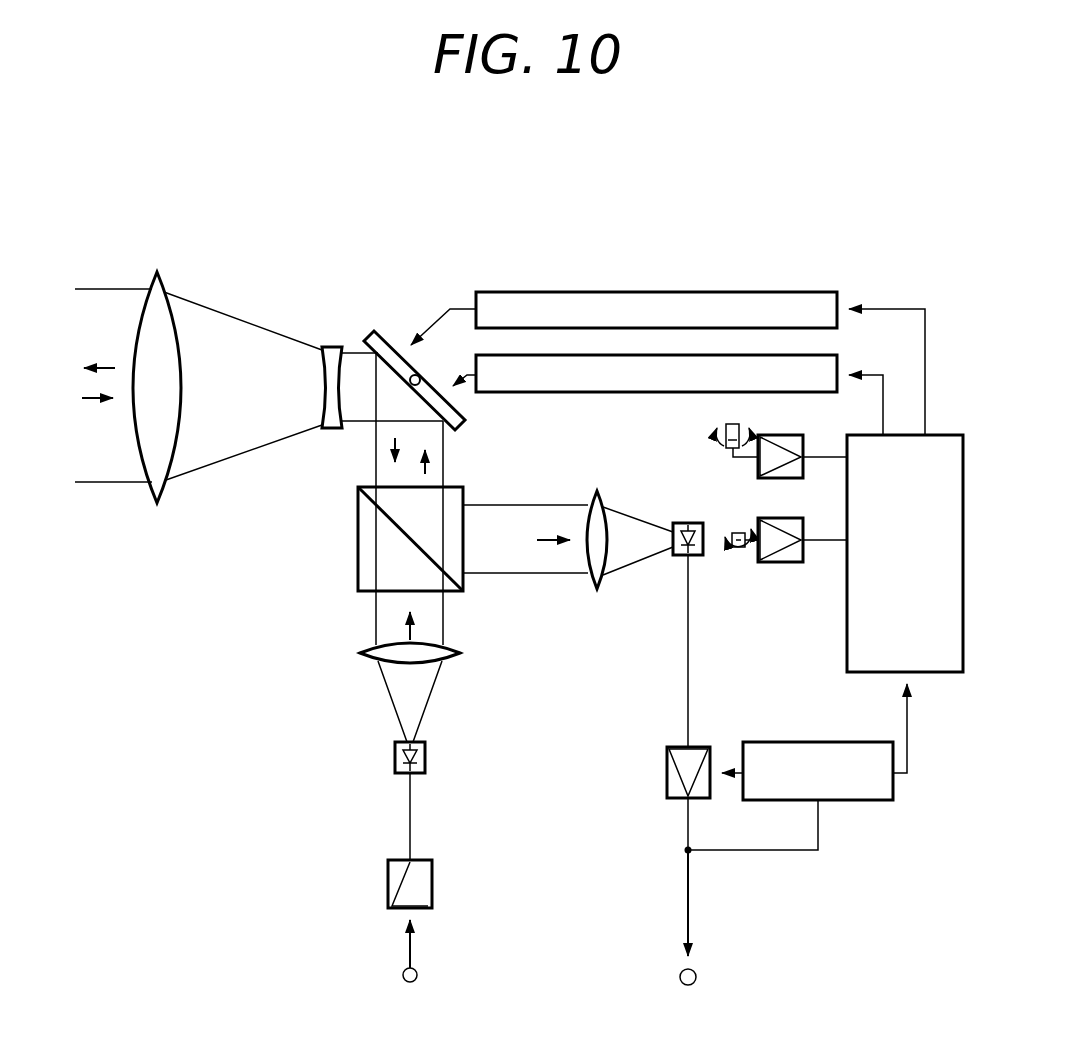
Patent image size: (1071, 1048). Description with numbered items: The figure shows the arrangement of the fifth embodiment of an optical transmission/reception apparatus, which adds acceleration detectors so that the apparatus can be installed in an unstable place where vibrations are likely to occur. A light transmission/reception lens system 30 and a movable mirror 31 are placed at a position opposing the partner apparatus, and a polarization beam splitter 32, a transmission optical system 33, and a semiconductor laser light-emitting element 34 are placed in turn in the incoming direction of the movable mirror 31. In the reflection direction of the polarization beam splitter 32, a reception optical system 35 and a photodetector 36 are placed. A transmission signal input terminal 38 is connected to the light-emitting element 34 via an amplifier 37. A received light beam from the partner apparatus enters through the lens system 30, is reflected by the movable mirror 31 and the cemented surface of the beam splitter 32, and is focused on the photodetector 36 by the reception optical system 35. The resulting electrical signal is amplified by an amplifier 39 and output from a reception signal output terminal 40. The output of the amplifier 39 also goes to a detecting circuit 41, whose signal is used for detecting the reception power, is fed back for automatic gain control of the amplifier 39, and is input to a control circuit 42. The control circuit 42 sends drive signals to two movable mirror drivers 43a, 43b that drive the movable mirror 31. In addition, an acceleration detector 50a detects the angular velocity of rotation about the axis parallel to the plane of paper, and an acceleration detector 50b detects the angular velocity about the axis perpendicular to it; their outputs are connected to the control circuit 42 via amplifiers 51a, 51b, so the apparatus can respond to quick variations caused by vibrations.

The light transmission/reception lens system 30 is at (160, 290).
The movable mirror 31 is at (387, 338).
The polarization beam splitter 32 is at (358, 509).
The transmission optical system 33 is at (363, 653).
The semiconductor laser light-emitting element 34 is at (395, 756).
The reception optical system 35 is at (598, 491).
The photodetector 36 is at (688, 522).
The amplifier 37 is at (388, 876).
The transmission signal input terminal 38 is at (403, 975).
The amplifier 39 is at (667, 746).
The reception signal output terminal 40 is at (697, 975).
The detecting circuit 41 is at (870, 800).
The control circuit 42 is at (940, 435).
The movable mirror driver 43a is at (822, 292).
The movable mirror driver 43b is at (545, 392).
The acceleration detector 50a is at (733, 424).
The acceleration detector 50b is at (733, 533).
The amplifier 51a is at (803, 438).
The amplifier 51b is at (804, 520).